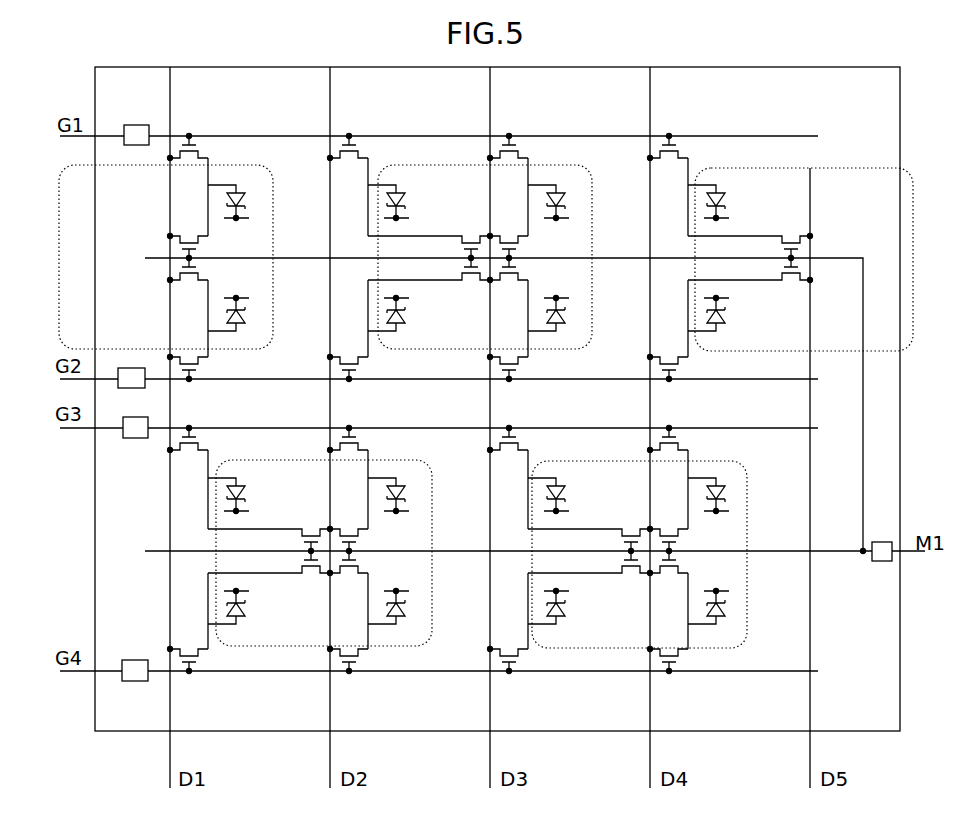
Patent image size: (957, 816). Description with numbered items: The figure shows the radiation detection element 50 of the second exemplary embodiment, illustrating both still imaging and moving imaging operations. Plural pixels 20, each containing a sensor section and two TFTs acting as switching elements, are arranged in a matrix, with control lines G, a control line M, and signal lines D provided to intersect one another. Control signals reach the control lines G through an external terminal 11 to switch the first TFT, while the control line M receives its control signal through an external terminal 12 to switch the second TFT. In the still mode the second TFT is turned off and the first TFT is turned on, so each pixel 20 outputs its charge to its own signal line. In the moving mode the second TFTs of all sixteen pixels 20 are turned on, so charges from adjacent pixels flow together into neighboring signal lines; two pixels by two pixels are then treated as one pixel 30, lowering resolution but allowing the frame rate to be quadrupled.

The external terminal 11 is at (136, 125).
The external terminal 12 is at (885, 542).
The pixel 20 is at (276, 152).
The one pixel 30 is at (158, 165).
The radiation detection element 50 is at (800, 67).